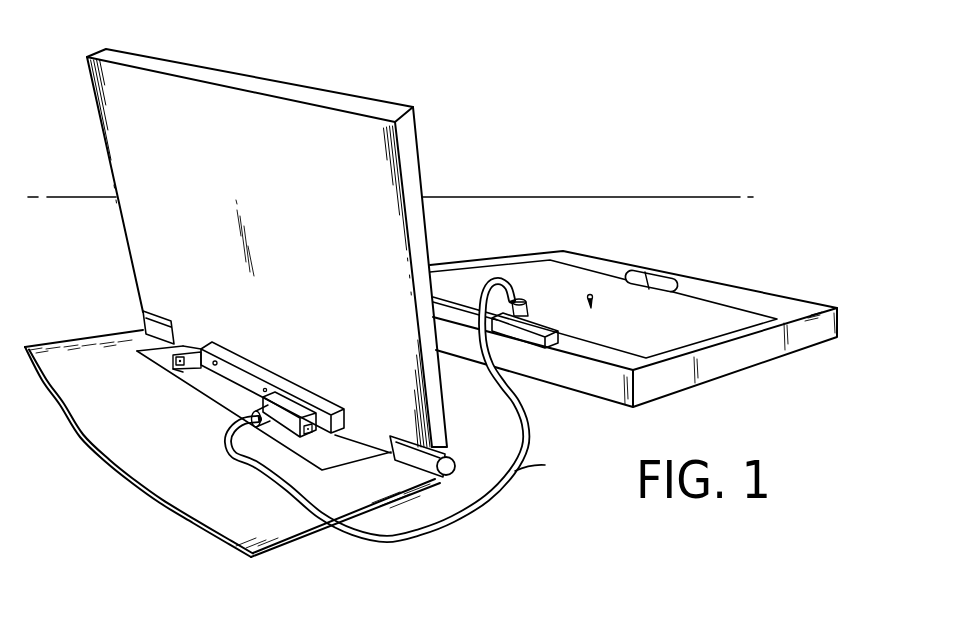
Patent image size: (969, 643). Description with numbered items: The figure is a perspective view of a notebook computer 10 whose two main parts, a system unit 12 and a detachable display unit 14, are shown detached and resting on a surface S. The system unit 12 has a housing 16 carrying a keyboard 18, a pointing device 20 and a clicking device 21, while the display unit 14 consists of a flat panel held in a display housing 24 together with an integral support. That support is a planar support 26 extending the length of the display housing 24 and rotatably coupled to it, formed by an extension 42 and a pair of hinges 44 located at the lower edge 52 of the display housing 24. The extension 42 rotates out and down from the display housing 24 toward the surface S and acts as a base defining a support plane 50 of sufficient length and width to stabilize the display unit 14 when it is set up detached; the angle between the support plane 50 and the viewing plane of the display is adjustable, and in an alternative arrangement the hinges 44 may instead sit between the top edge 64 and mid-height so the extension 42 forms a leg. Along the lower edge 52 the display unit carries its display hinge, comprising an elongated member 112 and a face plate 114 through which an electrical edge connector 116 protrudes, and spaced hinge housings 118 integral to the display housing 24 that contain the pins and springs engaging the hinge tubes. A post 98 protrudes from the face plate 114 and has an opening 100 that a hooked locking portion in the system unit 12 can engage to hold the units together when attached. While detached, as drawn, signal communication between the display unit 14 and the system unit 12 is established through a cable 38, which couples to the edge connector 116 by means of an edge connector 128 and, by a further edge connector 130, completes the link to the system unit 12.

The notebook computer 10 is at (652, 101).
The system unit 12 is at (838, 300).
The detachable display unit 14 is at (385, 93).
The housing 16 is at (603, 260).
The keyboard 18 is at (737, 307).
The pointing device 20 is at (593, 296).
The clicking device 21 is at (645, 273).
The display housing 24 is at (418, 147).
The planar support 26 is at (297, 547).
The cable 38 is at (520, 468).
The extension 42 is at (119, 480).
The hinges 44 is at (141, 315).
The support plane 50 is at (225, 493).
The lower edge 52 is at (358, 447).
The top edge 64 is at (242, 75).
The post 98 is at (193, 366).
The opening 100 is at (171, 370).
The elongated member 112 is at (249, 358).
The face plate 114 is at (240, 380).
The edge connector 116 is at (287, 400).
The housings 118 is at (372, 430).
The edge connector 128 is at (298, 410).
The edge connector 130 is at (543, 322).
The surface S is at (543, 229).